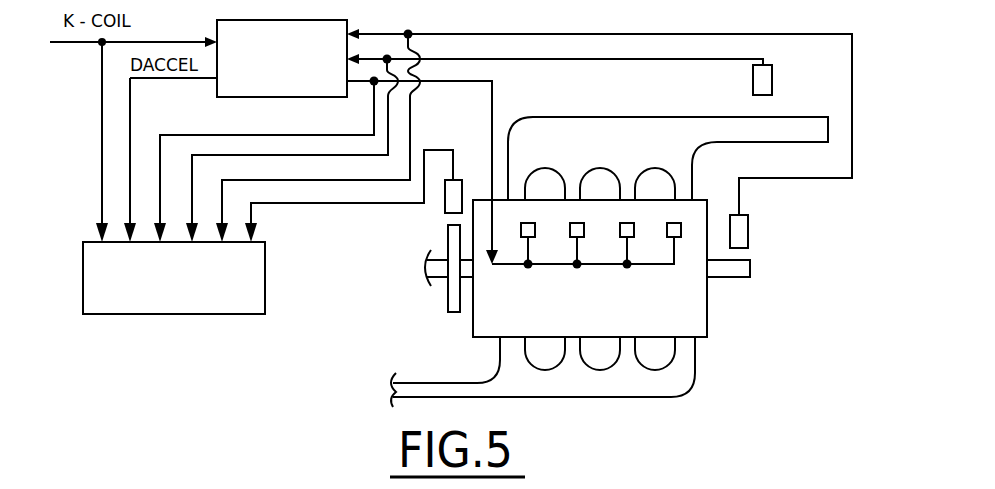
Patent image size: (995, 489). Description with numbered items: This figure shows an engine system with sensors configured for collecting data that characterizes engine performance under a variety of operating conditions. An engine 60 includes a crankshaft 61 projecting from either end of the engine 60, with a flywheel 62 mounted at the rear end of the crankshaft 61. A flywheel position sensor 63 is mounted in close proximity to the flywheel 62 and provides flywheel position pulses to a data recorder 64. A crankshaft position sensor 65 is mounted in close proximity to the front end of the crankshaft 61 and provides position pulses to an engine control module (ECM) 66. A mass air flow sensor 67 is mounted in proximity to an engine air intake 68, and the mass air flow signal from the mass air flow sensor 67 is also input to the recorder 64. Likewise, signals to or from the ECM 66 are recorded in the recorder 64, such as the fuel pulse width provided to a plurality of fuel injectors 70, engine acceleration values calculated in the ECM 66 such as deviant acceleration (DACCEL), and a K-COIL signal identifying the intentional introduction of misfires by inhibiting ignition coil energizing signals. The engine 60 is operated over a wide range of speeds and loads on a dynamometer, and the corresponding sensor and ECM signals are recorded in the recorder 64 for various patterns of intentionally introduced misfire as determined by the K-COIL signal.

The engine 60 is at (707, 315).
The crankshaft 61 is at (440, 285).
The flywheel 62 is at (445, 240).
The flywheel position sensor 63 is at (445, 207).
The data recorder 64 is at (217, 315).
The crankshaft position sensor 65 is at (748, 235).
The engine control module (ECM) 66 is at (352, 21).
The mass air flow sensor 67 is at (772, 78).
The engine air intake 68 is at (812, 142).
The fuel injectors 70 is at (600, 282).